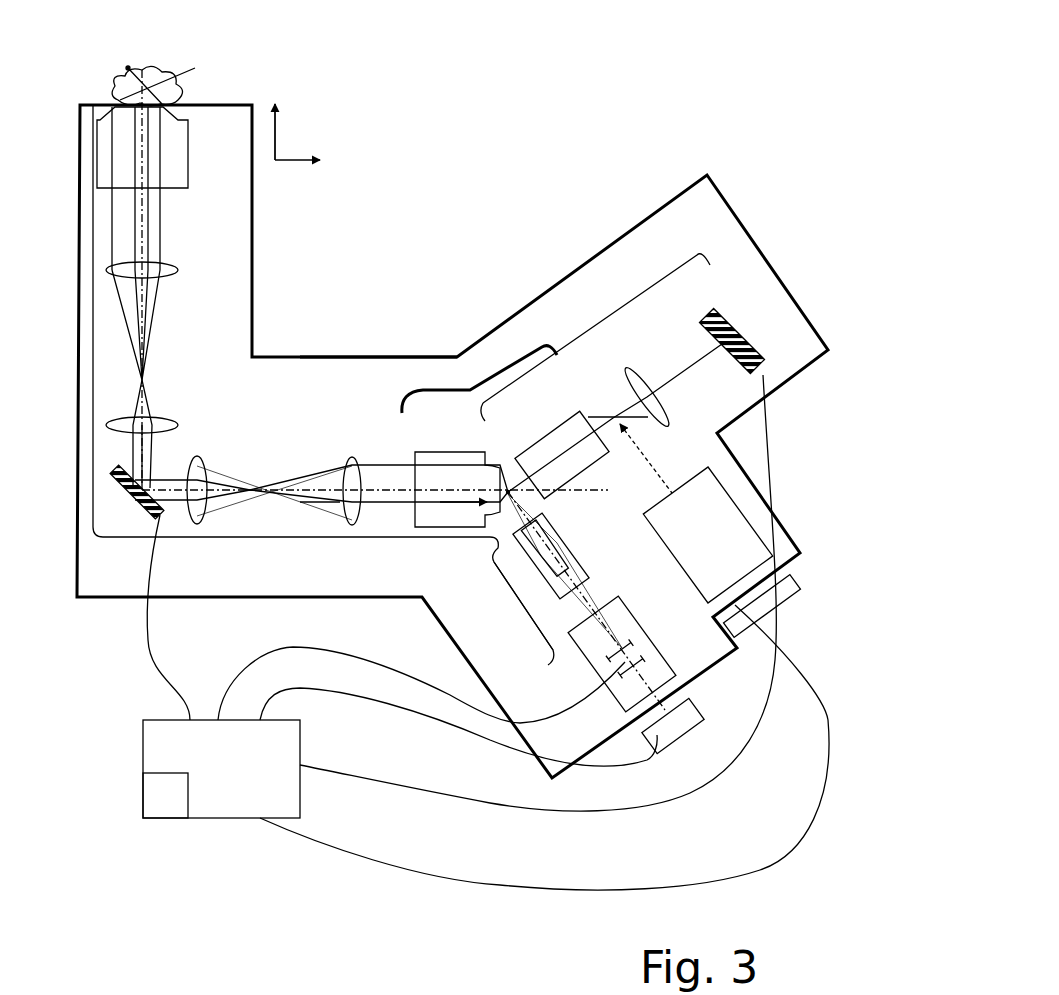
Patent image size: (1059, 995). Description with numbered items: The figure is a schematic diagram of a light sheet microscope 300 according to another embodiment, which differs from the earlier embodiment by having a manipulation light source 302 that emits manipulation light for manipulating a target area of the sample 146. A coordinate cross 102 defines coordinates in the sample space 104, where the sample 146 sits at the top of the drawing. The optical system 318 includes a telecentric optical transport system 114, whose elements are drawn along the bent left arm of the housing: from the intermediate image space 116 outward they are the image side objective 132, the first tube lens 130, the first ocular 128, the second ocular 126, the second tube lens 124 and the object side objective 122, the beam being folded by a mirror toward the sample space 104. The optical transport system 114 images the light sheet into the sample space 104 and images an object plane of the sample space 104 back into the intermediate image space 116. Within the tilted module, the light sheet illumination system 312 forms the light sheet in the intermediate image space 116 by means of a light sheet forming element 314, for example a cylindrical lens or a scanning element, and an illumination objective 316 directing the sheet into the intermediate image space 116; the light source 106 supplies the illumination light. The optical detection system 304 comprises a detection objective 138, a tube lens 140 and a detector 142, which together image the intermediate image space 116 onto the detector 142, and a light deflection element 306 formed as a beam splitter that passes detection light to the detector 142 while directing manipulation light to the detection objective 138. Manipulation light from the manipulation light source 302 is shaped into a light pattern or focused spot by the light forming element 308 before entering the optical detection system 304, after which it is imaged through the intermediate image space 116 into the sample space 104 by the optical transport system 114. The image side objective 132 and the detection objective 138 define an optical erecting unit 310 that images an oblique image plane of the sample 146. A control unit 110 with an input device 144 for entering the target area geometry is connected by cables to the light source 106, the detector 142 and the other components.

The light sheet microscope 300 is at (581, 116).
The optical system 318 is at (384, 357).
The optical transport system 114 is at (290, 550).
The light sheet illumination system 312 is at (553, 652).
The optical detection system 304 is at (594, 324).
The optical erecting unit 310 is at (479, 379).
The coordinate cross 102 is at (278, 135).
The sample space 104 is at (205, 48).
The sample 146 is at (182, 94).
The object side objective 122 is at (188, 158).
The second tube lens 124 is at (186, 272).
The second ocular 126 is at (181, 422).
The intermediate image space 116 is at (508, 466).
The first ocular 128 is at (210, 466).
The first tube lens 130 is at (353, 456).
The image side objective 132 is at (443, 449).
The detection objective 138 is at (560, 427).
The light deflection element 306 is at (613, 416).
The tube lens 140 is at (670, 409).
The detector 142 is at (736, 311).
The light forming element 308 is at (752, 519).
The manipulation light source 302 is at (795, 577).
The illumination objective 316 is at (586, 545).
The light sheet forming element 314 is at (640, 641).
The light source 106 is at (693, 704).
The control unit 110 is at (245, 782).
The input device 144 is at (167, 806).